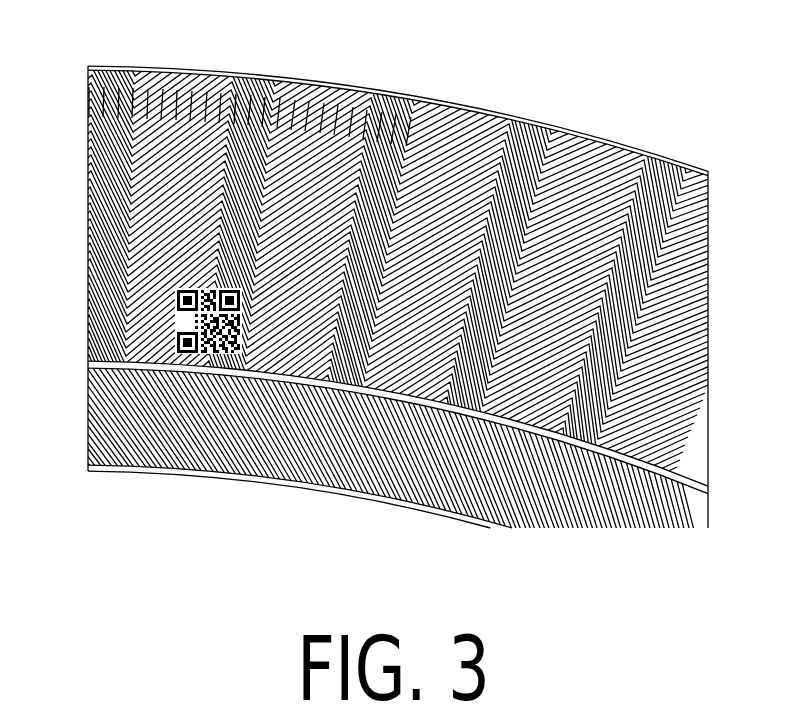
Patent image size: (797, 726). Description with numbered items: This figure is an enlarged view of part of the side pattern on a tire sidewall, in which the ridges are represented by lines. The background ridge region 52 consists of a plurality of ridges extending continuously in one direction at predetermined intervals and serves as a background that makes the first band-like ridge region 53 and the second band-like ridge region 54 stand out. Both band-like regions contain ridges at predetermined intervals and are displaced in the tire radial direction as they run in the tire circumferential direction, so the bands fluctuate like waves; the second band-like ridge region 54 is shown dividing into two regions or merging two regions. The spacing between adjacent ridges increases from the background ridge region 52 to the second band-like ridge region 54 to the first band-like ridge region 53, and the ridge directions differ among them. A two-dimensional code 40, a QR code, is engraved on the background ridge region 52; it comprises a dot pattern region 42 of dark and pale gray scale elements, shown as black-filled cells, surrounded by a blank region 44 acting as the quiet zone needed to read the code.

The two-dimensional code 40 is at (229, 352).
The dot pattern region 42 is at (174, 325).
The blank region 44 is at (176, 345).
The background ridge region 52 is at (405, 85).
The first band-like ridge region 53 is at (380, 136).
The second band-like ridge region 54 is at (565, 150).